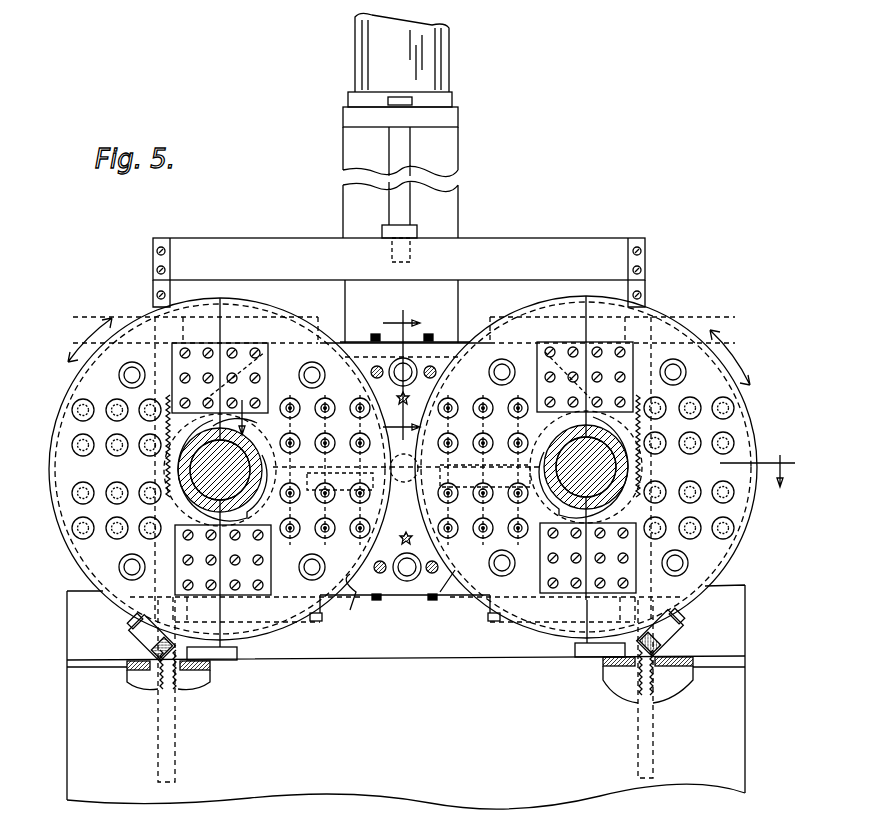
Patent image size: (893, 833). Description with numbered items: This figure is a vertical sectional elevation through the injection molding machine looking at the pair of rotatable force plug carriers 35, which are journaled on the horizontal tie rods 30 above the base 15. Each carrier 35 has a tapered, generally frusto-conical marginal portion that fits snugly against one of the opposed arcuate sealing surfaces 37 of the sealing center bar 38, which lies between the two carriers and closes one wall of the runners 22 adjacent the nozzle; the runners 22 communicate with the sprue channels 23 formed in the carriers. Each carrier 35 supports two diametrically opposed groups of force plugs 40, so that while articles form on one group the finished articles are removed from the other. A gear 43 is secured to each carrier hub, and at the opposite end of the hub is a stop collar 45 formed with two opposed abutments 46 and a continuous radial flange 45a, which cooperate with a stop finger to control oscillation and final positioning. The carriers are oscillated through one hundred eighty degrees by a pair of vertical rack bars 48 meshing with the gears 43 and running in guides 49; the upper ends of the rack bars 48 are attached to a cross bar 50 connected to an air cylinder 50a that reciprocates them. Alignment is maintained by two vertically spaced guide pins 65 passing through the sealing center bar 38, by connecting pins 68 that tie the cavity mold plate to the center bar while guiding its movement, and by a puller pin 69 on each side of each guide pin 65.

The base 15 is at (440, 749).
The runners 22 is at (406, 483).
The sprue channels 23 is at (462, 596).
The tie rods 30 is at (208, 469).
The force plug carriers 35 is at (88, 546).
The arcuate sealing surfaces 37 is at (434, 588).
The sealing center bar 38 is at (355, 343).
The force plugs 40 is at (328, 404).
The gear 43 is at (403, 467).
The stop collar 45 is at (197, 500).
The radial flange 45a is at (258, 492).
The abutments 46 is at (227, 512).
The rack bars 48 is at (165, 672).
The guides 49 is at (315, 621).
The cross bar 50 is at (549, 246).
The air cylinder 50a is at (390, 50).
The guide pins 65 is at (407, 370).
The connecting pins 68 is at (406, 398).
The puller pin 69 is at (378, 366).